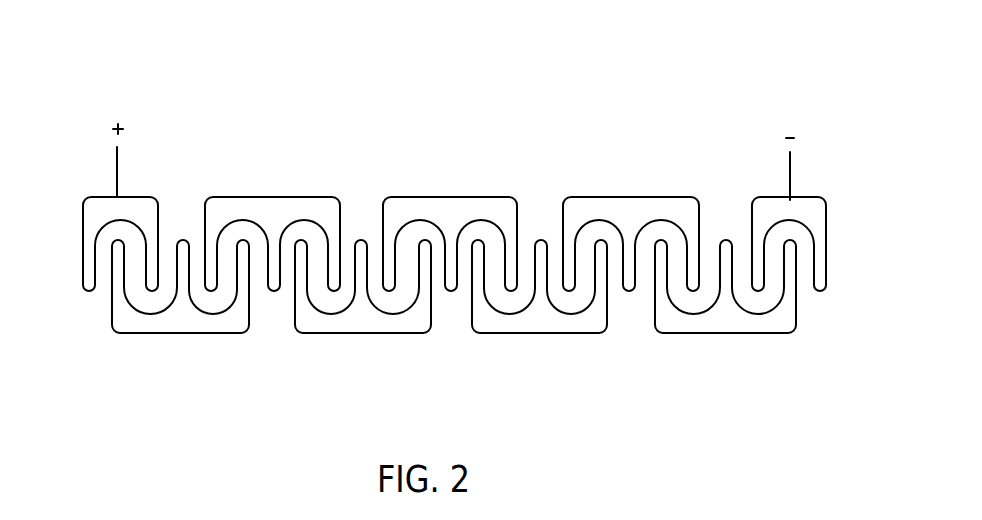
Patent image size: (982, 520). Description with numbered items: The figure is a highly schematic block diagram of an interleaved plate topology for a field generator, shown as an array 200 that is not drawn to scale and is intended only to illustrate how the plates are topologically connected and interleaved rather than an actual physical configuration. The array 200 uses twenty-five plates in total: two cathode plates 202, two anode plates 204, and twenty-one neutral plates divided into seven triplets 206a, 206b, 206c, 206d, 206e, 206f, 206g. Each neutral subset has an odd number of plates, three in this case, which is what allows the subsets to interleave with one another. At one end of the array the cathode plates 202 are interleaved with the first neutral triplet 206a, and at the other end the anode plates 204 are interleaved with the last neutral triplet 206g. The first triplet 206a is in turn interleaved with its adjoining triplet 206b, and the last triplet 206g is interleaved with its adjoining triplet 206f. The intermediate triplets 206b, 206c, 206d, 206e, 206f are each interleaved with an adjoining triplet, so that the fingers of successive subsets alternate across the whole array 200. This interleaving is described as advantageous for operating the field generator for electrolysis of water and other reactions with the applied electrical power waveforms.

The array 200 is at (532, 80).
The cathode plates 202 is at (818, 198).
The anode plates 204 is at (132, 197).
The first neutral triplet 206a is at (710, 333).
The neutral triplet 206b is at (625, 198).
The neutral triplet 206c is at (515, 333).
The neutral triplet 206d is at (450, 198).
The neutral triplet 206e is at (340, 333).
The neutral triplet 206f is at (275, 197).
The last neutral triplet 206g is at (160, 333).